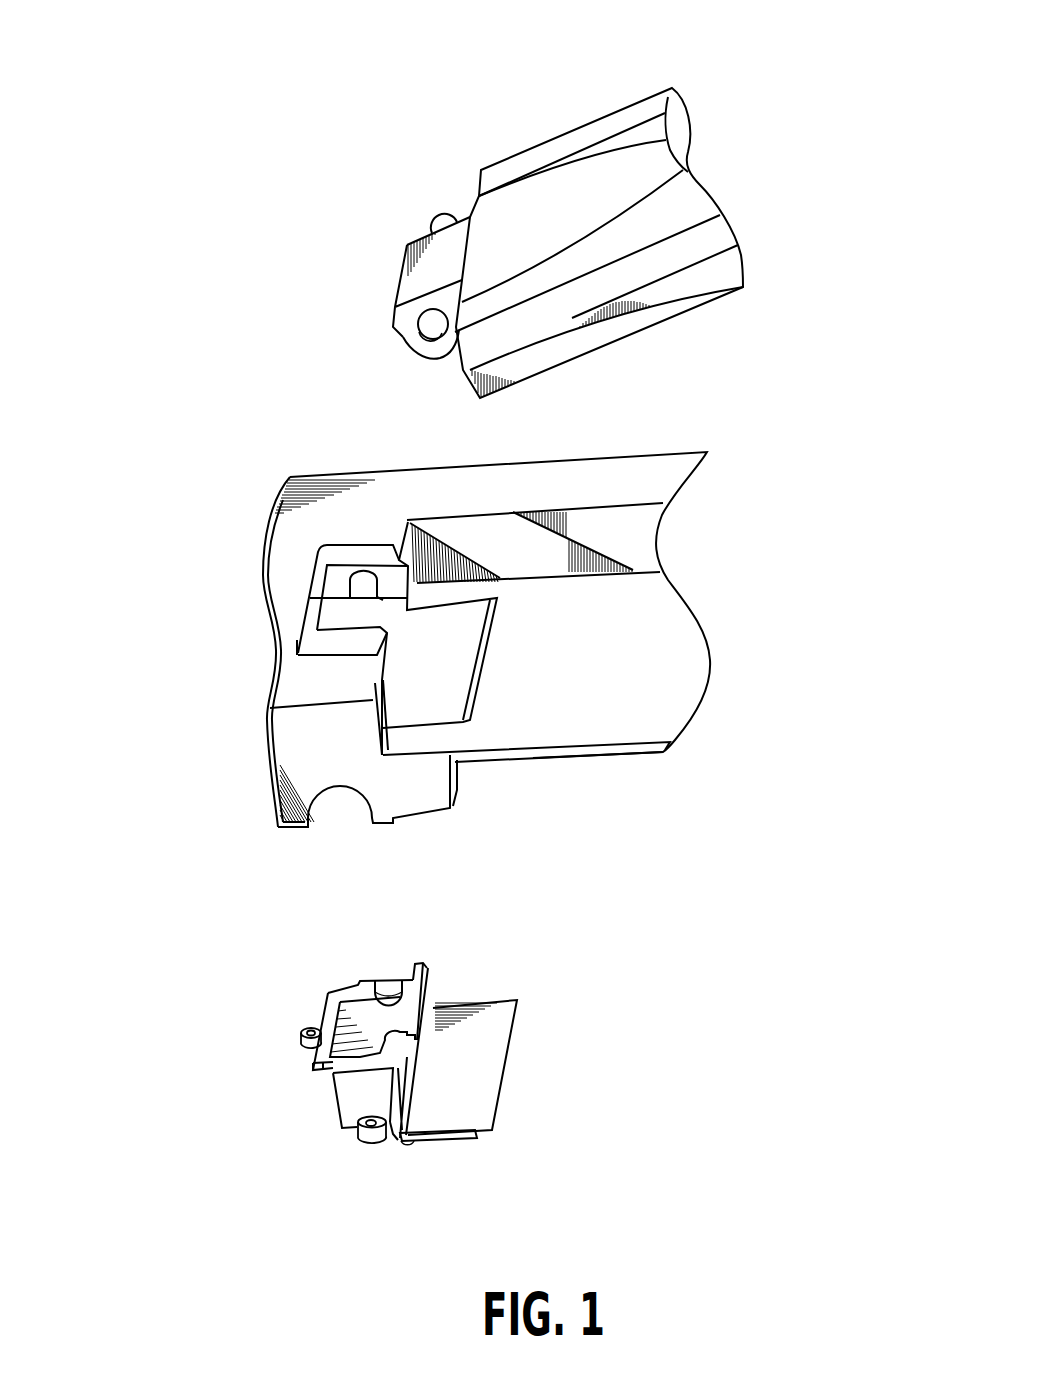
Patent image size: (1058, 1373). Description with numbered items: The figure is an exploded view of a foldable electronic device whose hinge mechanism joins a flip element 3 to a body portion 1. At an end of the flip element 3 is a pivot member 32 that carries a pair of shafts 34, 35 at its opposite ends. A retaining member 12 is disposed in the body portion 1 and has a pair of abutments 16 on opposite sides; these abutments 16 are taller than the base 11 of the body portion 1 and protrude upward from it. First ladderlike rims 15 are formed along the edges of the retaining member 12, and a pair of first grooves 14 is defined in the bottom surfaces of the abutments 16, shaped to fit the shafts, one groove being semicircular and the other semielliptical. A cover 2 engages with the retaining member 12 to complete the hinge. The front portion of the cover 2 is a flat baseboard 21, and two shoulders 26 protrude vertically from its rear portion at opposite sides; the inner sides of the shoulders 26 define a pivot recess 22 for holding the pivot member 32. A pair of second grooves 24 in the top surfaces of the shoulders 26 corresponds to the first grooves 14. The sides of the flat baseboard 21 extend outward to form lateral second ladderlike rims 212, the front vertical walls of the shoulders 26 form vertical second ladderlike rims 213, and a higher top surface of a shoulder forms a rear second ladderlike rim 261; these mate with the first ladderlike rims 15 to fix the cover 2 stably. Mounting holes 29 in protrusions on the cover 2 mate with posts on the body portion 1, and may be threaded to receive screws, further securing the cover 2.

The body portion 1 is at (472, 617).
The cover 2 is at (484, 1073).
The flip element 3 is at (605, 203).
The base 11 is at (635, 663).
The retaining member 12 is at (262, 628).
The first grooves 14 is at (367, 583).
The first ladderlike rims 15 is at (473, 695).
The abutments 16 is at (398, 558).
The flat baseboard 21 is at (462, 1074).
The pivot recess 22 is at (335, 1012).
The second grooves 24 is at (385, 985).
The shoulders 26 is at (368, 982).
The mounting holes 29 is at (300, 1030).
The pivot member 32 is at (386, 281).
The shaft 34 is at (430, 333).
The shaft 35 is at (445, 214).
The lateral second ladderlike rims 212 is at (432, 1138).
The vertical second ladderlike rims 213 is at (427, 966).
The rear second ladderlike rim 261 is at (326, 1063).